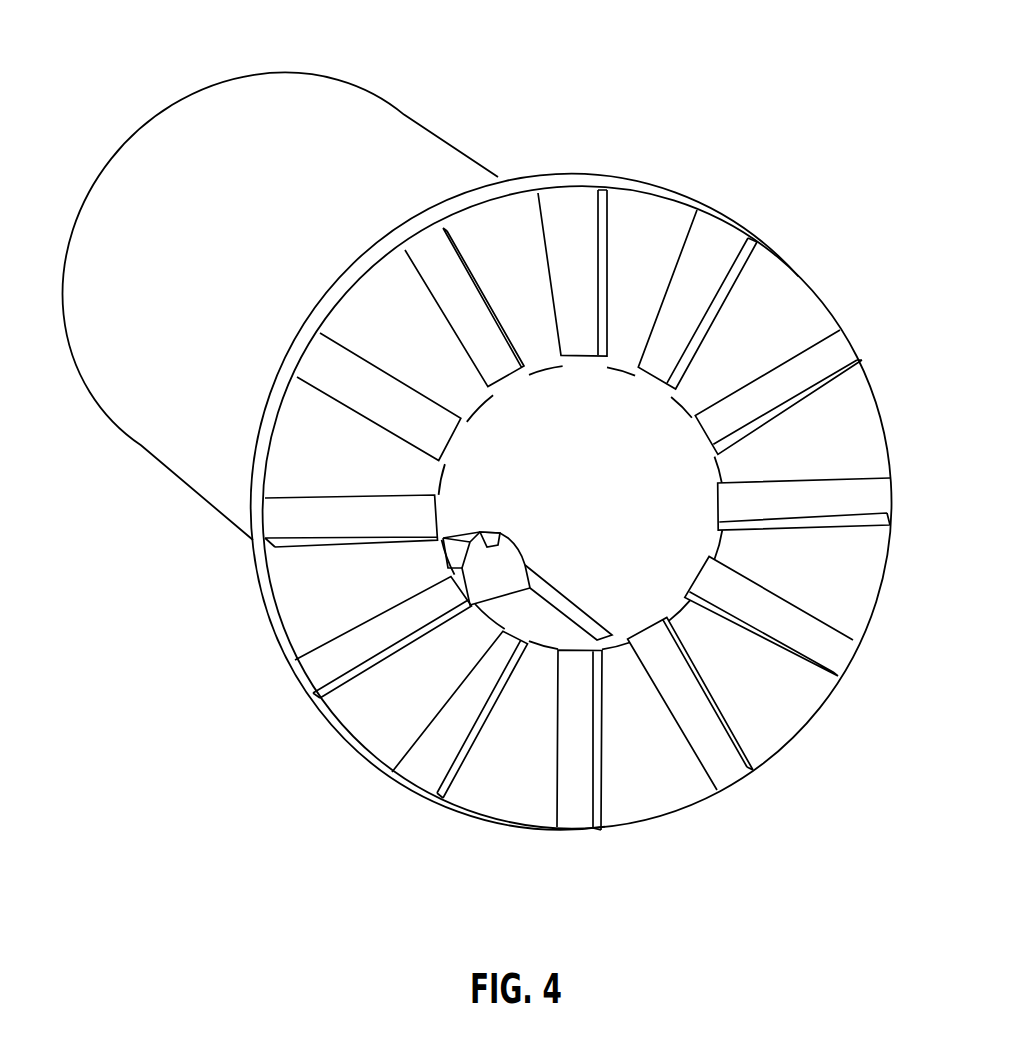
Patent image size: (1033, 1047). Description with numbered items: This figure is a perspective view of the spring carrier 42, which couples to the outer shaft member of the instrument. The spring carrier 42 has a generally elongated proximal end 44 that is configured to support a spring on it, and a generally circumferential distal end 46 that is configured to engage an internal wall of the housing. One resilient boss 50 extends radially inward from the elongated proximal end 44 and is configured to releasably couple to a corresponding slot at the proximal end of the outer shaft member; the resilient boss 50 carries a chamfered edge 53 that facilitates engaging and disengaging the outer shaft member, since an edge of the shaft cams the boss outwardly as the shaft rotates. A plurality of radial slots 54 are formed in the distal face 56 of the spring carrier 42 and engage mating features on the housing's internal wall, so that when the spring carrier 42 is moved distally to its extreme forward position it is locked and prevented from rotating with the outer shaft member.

The spring carrier 42 is at (795, 156).
The elongated proximal end 44 is at (405, 135).
The circumferential distal end 46 is at (625, 192).
The resilient boss 50 is at (500, 577).
The chamfered edge 53 is at (455, 548).
The radial slots 54 is at (830, 351).
The distal face 56 is at (850, 435).